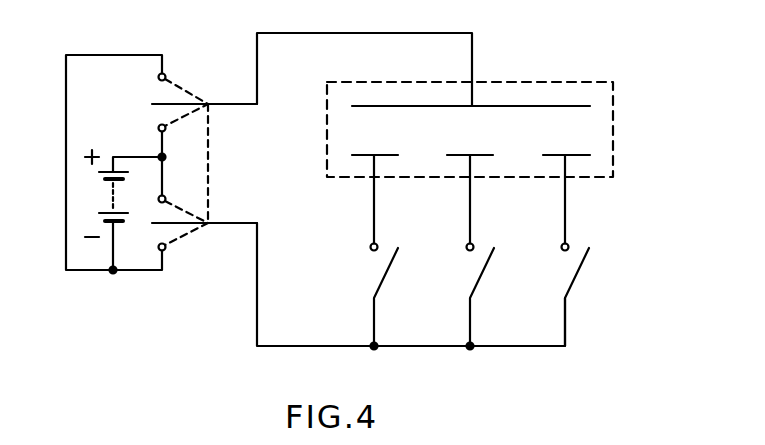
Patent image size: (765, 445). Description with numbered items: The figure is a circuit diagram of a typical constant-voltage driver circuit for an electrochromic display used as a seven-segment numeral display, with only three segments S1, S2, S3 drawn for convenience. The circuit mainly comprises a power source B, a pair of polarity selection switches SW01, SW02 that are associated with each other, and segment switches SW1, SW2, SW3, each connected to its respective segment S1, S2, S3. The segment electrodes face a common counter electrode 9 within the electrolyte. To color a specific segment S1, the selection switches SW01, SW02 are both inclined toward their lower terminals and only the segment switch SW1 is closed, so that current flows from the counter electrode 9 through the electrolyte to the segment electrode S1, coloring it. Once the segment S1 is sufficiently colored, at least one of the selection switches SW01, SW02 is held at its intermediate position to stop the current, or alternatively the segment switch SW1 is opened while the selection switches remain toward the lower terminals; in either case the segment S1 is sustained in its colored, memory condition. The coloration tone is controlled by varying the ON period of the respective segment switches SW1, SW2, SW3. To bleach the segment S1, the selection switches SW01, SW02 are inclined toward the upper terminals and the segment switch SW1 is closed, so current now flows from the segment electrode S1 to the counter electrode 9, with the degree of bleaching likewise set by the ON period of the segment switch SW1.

The counter electrode 9 is at (527, 105).
The segment S1 is at (357, 156).
The segment S2 is at (453, 156).
The segment S3 is at (548, 156).
The segment switch SW1 is at (401, 297).
The segment switch SW2 is at (496, 297).
The segment switch SW3 is at (593, 297).
The polarity selection switch SW01 is at (204, 149).
The polarity selection switch SW02 is at (204, 233).
The power source B is at (119, 210).